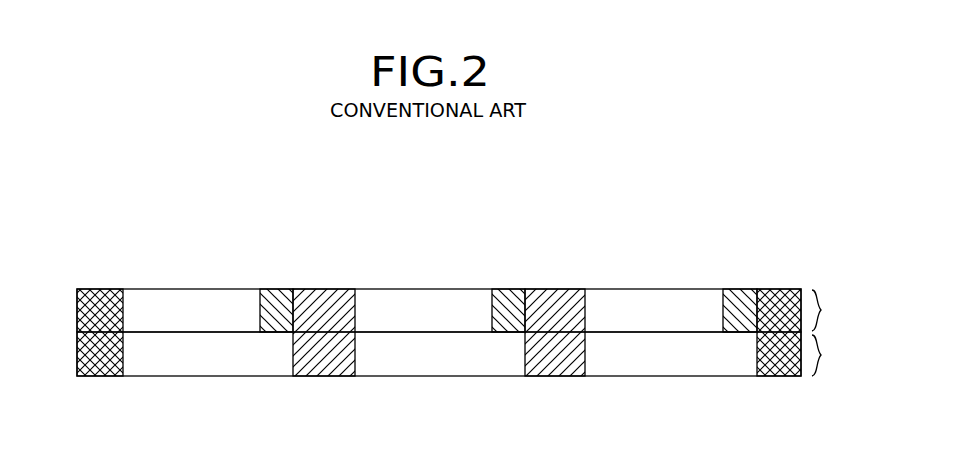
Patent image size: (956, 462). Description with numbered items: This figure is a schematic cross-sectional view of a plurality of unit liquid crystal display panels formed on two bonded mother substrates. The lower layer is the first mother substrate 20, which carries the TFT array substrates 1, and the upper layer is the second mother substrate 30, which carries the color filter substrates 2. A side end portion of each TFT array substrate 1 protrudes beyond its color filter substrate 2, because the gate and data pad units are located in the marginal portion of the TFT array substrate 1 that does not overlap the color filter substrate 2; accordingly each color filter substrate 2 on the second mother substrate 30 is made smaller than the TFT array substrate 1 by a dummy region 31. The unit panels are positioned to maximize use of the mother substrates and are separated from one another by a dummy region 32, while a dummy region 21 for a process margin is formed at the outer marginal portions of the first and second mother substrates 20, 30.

The TFT array substrate 1 is at (203, 362).
The color filter substrate 2 is at (203, 305).
The first mother substrate 20 is at (831, 355).
The dummy region for process margin 21 is at (100, 302).
The second mother substrate 30 is at (831, 310).
The dummy region 31 is at (278, 302).
The dummy region 32 is at (327, 302).